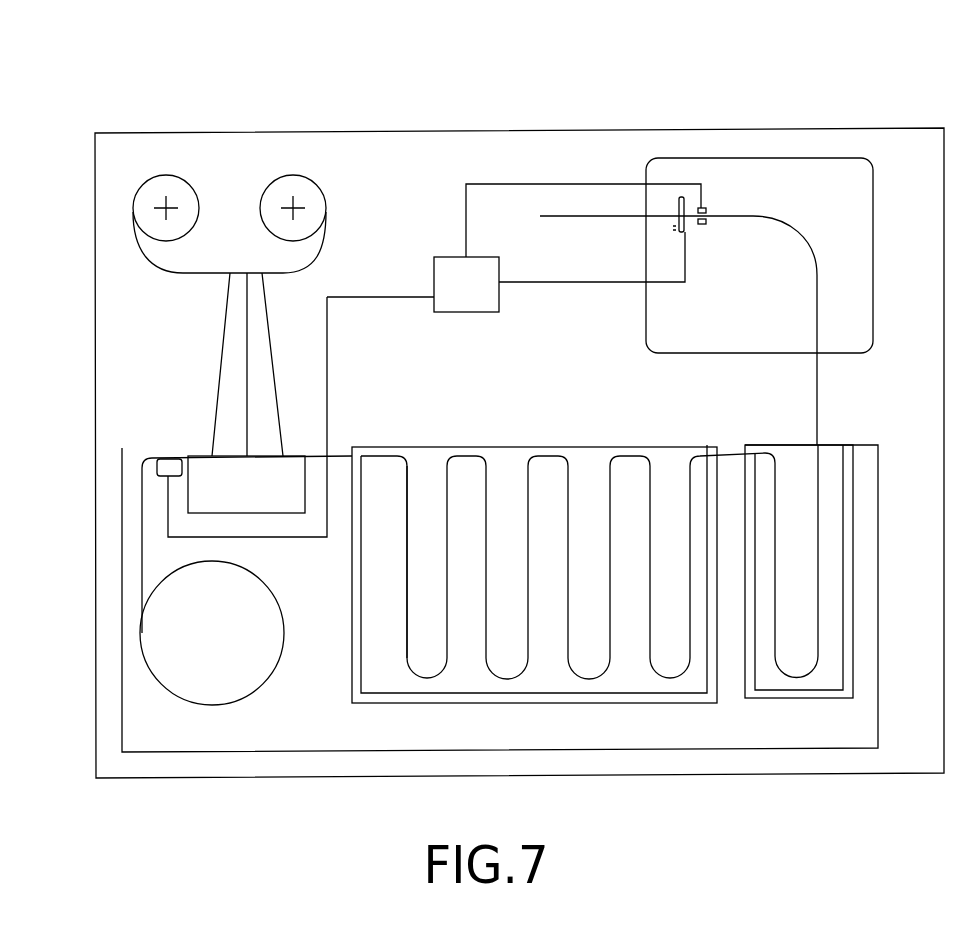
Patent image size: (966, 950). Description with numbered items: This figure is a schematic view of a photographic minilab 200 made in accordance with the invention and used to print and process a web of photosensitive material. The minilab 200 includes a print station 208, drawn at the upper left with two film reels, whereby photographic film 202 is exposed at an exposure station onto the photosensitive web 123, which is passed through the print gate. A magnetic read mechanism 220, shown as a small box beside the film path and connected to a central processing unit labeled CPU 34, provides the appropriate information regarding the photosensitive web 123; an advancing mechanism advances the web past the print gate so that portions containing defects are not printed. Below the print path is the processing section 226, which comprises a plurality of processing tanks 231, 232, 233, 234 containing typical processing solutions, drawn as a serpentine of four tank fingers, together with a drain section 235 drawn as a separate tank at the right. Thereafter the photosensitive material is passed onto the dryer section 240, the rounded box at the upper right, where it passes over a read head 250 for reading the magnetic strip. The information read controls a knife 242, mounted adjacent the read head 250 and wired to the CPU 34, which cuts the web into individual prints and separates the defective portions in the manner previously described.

The photographic minilab 200 is at (508, 100).
The print station 208 is at (213, 140).
The magnetic read mechanism 220 is at (305, 133).
The photographic film 202 is at (200, 275).
The photosensitive web 123 is at (140, 460).
The CPU 34 is at (460, 257).
The dryer section 240 is at (835, 170).
The knife 242 is at (681, 197).
The read head 250 is at (706, 210).
The processing section 226 is at (563, 515).
The processing tank 231 is at (428, 460).
The processing tank 232 is at (510, 462).
The processing tank 233 is at (590, 462).
The processing tank 234 is at (699, 535).
The drain section 235 is at (835, 462).